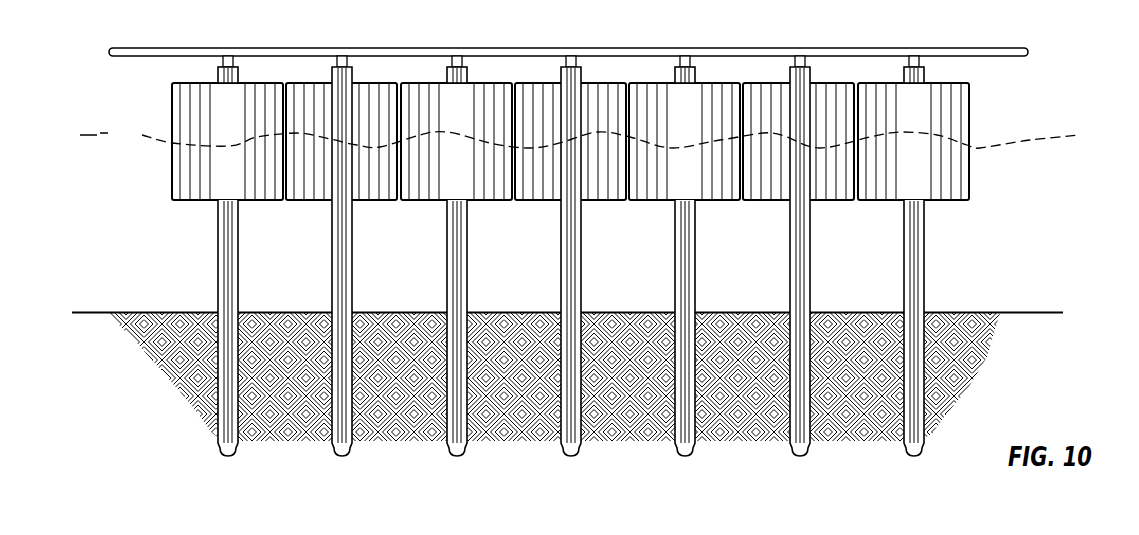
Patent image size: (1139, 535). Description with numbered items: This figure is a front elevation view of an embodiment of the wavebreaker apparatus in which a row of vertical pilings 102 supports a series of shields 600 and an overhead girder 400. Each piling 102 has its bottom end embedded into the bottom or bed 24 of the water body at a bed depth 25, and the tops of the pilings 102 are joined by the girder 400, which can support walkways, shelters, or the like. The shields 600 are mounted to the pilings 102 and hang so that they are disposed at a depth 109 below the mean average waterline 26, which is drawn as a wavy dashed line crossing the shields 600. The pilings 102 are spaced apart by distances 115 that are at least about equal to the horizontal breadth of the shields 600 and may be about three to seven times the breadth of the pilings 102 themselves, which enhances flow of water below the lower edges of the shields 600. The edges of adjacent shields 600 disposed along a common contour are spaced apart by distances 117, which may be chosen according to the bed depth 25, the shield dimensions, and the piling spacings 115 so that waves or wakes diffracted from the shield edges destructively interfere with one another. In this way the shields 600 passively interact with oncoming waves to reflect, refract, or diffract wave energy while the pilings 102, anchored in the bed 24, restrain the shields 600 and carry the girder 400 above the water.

The girder 400 is at (353, 57).
The shield 600 is at (471, 117).
The distance 117 is at (730, 115).
The depth 109 is at (456, 141).
The mean average waterline 26 is at (138, 145).
The bed depth 25 is at (95, 146).
The piling 102 is at (240, 266).
The distance 115 is at (663, 249).
The bed 24 is at (204, 365).